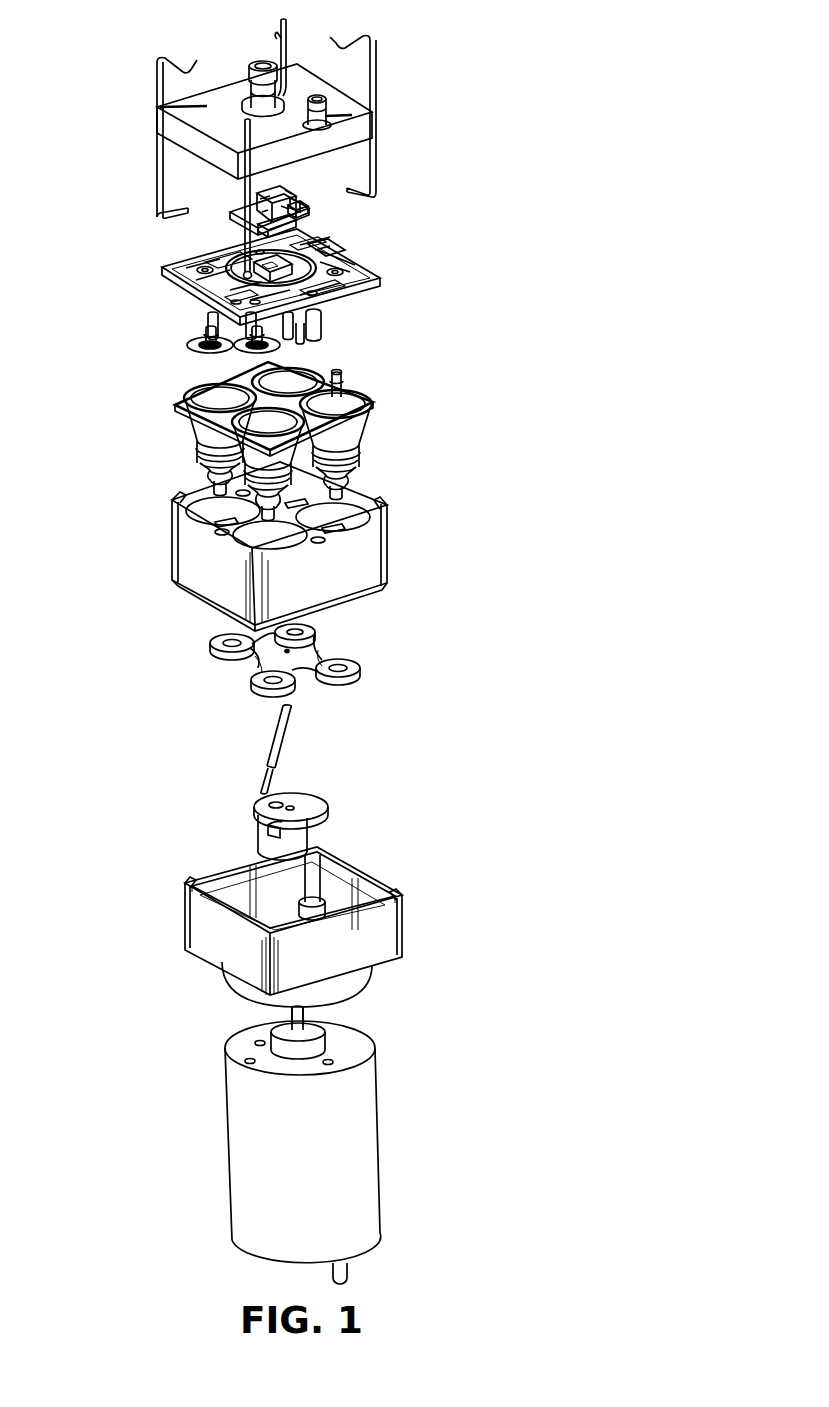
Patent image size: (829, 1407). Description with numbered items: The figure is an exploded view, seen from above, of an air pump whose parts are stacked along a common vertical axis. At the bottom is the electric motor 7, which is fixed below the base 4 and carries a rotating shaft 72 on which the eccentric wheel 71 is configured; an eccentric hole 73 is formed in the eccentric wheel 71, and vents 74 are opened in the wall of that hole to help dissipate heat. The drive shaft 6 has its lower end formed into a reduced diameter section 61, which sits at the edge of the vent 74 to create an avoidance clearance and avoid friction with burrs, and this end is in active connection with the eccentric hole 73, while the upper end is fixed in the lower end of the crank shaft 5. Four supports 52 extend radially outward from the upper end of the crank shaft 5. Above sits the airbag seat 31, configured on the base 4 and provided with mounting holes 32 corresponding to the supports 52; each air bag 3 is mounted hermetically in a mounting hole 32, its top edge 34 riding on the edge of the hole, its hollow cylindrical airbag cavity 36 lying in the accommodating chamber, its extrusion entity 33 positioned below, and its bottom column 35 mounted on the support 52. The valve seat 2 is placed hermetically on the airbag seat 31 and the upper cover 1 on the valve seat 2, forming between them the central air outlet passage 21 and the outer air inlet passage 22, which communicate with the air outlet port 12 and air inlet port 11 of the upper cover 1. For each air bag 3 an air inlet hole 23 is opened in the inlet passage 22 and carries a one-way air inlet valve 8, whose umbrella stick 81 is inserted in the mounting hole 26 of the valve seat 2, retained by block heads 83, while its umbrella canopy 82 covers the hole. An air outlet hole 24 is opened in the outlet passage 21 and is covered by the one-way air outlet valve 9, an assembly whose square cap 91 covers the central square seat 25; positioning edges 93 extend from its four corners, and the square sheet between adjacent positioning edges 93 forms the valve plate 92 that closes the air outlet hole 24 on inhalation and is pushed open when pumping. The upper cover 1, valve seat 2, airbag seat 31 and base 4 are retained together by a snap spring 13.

The upper cover 1 is at (73, 38).
The air inlet port 11 is at (243, 98).
The air outlet port 12 is at (262, 66).
The snap spring 13 is at (243, 125).
The one-way air outlet valve 9 is at (97, 192).
The square cap 91 is at (262, 238).
The valve plate 92 is at (233, 211).
The positioning edge 93 is at (258, 222).
The valve seat 2 is at (462, 147).
The central air outlet passage 21 is at (374, 263).
The outer air inlet passage 22 is at (335, 312).
The air inlet hole 23 is at (300, 218).
The air outlet hole 24 is at (300, 232).
The central square seat 25 is at (320, 252).
The mounting hole 26 is at (345, 288).
The one-way air inlet valve 8 is at (57, 318).
The umbrella stick 81 is at (200, 347).
The umbrella canopy 82 is at (222, 352).
The block head 83 is at (205, 335).
The air bag 3 is at (510, 343).
The airbag seat 31 is at (367, 547).
The mounting hole 32 is at (348, 506).
The extrusion entity 33 is at (347, 450).
The top edge 34 is at (360, 397).
The bottom column 35 is at (330, 488).
The hollow cylindrical airbag cavity 36 is at (342, 373).
The crank shaft 5 is at (322, 645).
The support 52 is at (353, 675).
The drive shaft 6 is at (280, 733).
The reduced diameter section 61 is at (262, 780).
The eccentric wheel 71 is at (318, 798).
The eccentric hole 73 is at (328, 813).
The vent 74 is at (307, 836).
The base 4 is at (383, 937).
The rotating shaft 72 is at (342, 1026).
The electric motor 7 is at (347, 1153).